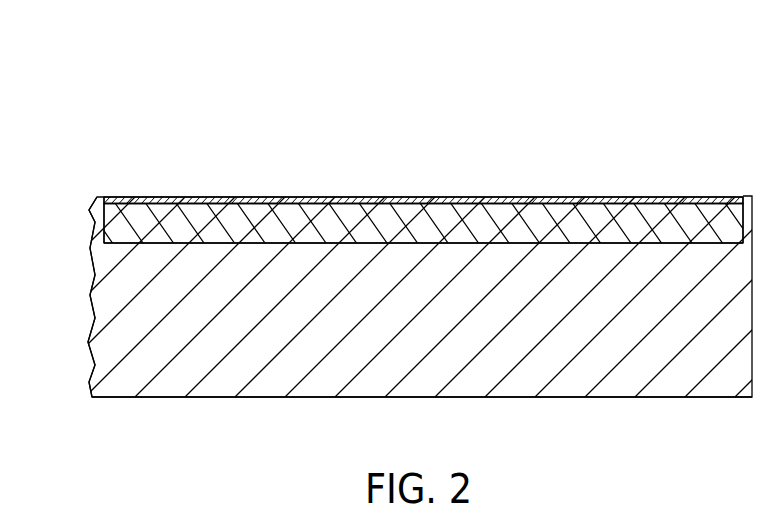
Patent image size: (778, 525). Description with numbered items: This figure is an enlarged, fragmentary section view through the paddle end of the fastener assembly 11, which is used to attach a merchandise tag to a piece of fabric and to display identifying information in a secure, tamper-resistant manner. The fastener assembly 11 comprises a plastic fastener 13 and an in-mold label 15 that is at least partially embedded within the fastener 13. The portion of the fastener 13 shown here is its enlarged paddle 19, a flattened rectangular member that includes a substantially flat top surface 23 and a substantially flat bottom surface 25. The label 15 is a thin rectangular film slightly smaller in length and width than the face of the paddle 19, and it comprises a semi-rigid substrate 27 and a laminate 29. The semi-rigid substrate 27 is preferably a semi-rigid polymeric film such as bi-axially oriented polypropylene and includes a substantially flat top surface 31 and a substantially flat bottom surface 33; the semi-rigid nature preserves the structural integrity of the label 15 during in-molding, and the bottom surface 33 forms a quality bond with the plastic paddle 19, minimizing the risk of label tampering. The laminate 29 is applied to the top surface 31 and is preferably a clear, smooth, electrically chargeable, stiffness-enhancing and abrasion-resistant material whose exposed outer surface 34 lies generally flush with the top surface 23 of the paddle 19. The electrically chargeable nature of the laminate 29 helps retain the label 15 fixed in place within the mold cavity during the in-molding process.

The fastener assembly 11 is at (99, 87).
The plastic fastener 13 is at (672, 388).
The in-mold label 15 is at (730, 197).
The paddle 19 is at (125, 387).
The top surface 23 is at (101, 196).
The bottom surface 25 is at (268, 400).
The semi-rigid substrate 27 is at (318, 213).
The laminate 29 is at (505, 203).
The top surface 31 is at (225, 204).
The bottom surface 33 is at (590, 243).
The exposed outer surface 34 is at (422, 197).